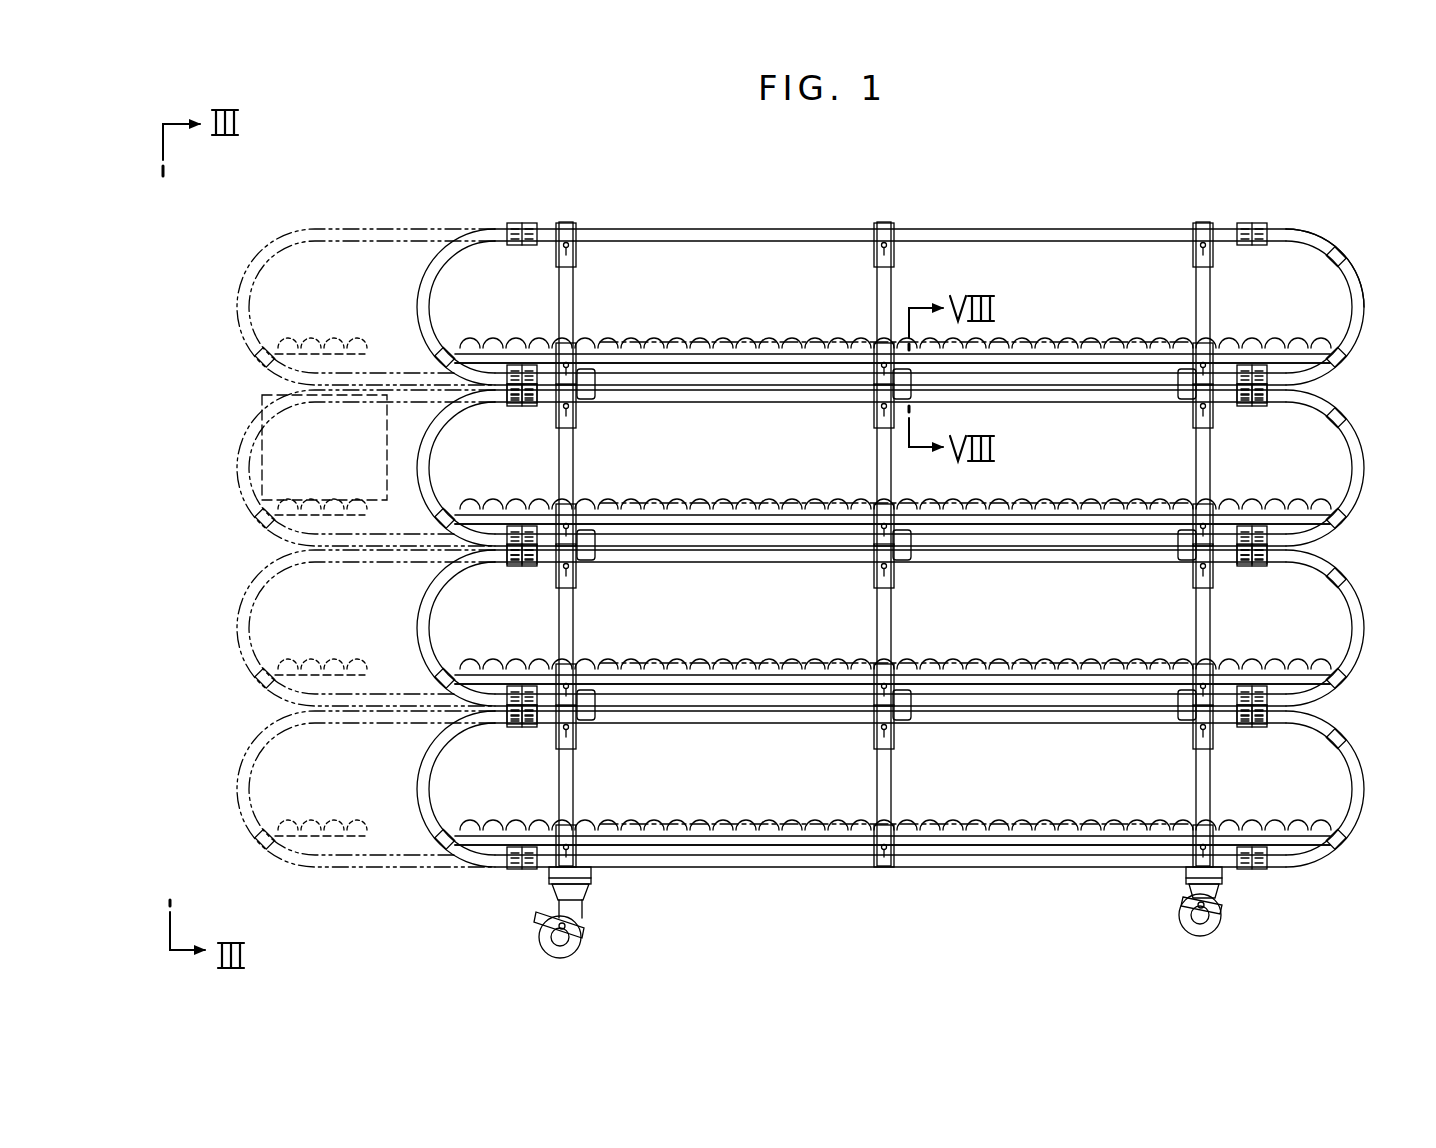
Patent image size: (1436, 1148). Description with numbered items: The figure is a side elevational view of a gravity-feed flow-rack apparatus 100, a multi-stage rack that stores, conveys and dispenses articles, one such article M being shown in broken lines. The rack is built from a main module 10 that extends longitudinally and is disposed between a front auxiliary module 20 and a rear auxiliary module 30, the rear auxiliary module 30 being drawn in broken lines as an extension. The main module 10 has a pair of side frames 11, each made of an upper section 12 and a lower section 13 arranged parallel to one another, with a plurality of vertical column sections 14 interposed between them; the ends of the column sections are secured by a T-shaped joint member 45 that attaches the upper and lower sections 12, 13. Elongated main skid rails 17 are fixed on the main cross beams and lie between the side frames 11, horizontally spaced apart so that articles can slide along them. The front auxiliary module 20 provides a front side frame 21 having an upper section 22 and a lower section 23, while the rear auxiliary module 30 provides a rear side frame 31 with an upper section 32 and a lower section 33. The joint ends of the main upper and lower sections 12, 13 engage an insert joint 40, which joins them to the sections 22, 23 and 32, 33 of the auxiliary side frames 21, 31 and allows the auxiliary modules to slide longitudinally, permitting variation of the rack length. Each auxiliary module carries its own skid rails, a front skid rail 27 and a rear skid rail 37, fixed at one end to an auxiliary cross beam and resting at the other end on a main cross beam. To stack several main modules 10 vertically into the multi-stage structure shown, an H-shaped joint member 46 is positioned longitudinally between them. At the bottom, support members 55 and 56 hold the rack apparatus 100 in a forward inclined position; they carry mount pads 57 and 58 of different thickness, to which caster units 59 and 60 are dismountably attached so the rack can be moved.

The gravity-feed flow-rack apparatus 100 is at (1078, 198).
The main module 10 is at (940, 222).
The side frame 11 is at (742, 300).
The upper section 12 is at (628, 228).
The lower section 13 is at (630, 372).
The vertical column section 14 is at (575, 282).
The main skid rail 17 is at (780, 348).
The front auxiliary module 20 is at (1350, 252).
The front side frame 21 is at (1292, 312).
The upper section of front side frame 22 is at (1295, 230).
The lower section of front side frame 23 is at (1338, 380).
The front skid rail 27 is at (1255, 688).
The rear auxiliary module 30 is at (420, 292).
The rear side frame 31 is at (502, 310).
The upper section of rear side frame 32 is at (510, 228).
The lower section of rear side frame 33 is at (508, 398).
The rear skid rail 37 is at (524, 688).
The insert joint 40 is at (1252, 402).
The T-shaped joint member 45 is at (592, 722).
The H-shaped joint member 46 is at (592, 398).
The support member 55 is at (1237, 930).
The support member 56 is at (527, 910).
The mount pad 57 is at (1225, 884).
The mount pad 58 is at (560, 878).
The caster unit 59 is at (1182, 920).
The caster unit 60 is at (585, 940).
The article M is at (270, 462).